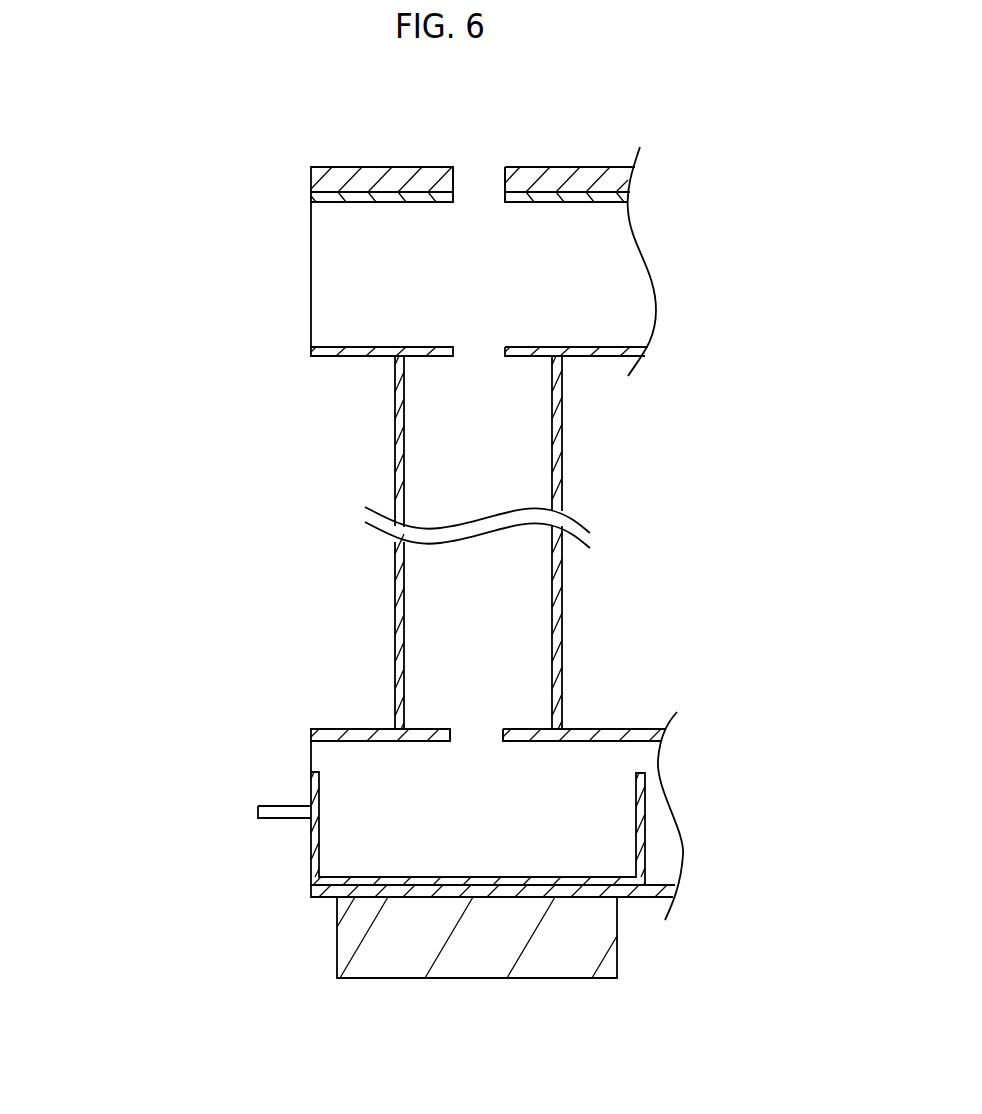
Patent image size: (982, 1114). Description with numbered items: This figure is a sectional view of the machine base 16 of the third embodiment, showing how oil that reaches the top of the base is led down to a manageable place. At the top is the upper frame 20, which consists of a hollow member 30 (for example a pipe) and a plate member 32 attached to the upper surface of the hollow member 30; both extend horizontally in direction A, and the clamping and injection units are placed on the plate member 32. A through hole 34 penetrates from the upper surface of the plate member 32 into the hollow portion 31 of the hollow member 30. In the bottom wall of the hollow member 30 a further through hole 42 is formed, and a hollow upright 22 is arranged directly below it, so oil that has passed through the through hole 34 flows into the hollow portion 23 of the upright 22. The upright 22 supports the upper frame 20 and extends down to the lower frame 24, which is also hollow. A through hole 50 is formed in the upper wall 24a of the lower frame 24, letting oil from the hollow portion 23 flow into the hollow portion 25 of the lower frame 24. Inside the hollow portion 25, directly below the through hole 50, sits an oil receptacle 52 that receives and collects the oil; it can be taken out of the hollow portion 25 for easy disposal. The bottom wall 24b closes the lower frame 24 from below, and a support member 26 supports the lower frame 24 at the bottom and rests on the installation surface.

The machine base 16 is at (270, 118).
The upper frame 20 is at (607, 118).
The upright 22 is at (400, 590).
The hollow portion 23 is at (433, 423).
The lower frame 24 is at (338, 727).
The upper wall 24a is at (600, 727).
The bottom wall 24b is at (323, 898).
The hollow portion 25 is at (367, 768).
The support member 26 is at (483, 960).
The hollow member 30 is at (596, 193).
The hollow portion 31 is at (347, 258).
The plate member 32 is at (542, 178).
The through hole 34 is at (454, 178).
The through hole 42 is at (453, 351).
The through hole 50 is at (450, 736).
The oil receptacle 52 is at (313, 852).